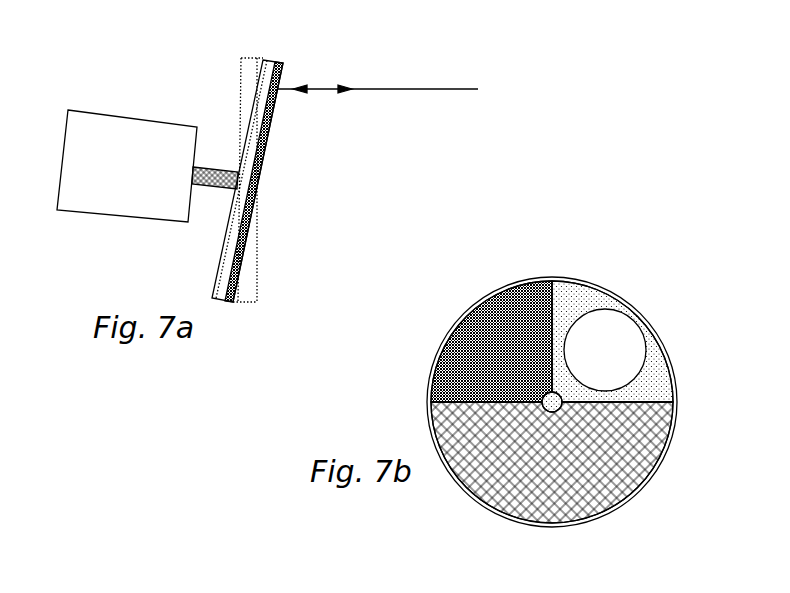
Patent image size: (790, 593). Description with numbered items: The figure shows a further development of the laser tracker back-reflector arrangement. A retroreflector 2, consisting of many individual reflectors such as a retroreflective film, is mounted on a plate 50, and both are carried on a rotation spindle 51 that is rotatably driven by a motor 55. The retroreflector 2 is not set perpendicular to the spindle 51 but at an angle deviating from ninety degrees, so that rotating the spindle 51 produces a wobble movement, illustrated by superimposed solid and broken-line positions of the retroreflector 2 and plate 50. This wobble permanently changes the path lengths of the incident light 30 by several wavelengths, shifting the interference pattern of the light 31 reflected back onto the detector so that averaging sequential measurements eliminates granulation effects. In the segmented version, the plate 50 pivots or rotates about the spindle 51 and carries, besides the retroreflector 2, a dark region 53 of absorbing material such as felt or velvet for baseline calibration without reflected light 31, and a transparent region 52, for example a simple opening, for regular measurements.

In FIG. 7A, the retroreflector 2 is at (268, 128).
In FIG. 7B, the retroreflector 2 is at (533, 490).
In FIG. 7A, the incident light 30 is at (378, 107).
In FIG. 7A, the reflected light 31 is at (465, 90).
In FIG. 7A, the plate 50 is at (285, 47).
In FIG. 7B, the plate 50 is at (645, 283).
In FIG. 7A, the rotation spindle 51 is at (219, 175).
In FIG. 7B, the rotation spindle 51 is at (542, 399).
In FIG. 7B, the transparent region 52 is at (613, 355).
In FIG. 7B, the dark calibration region 53 is at (478, 300).
In FIG. 7A, the motor 55 is at (133, 207).